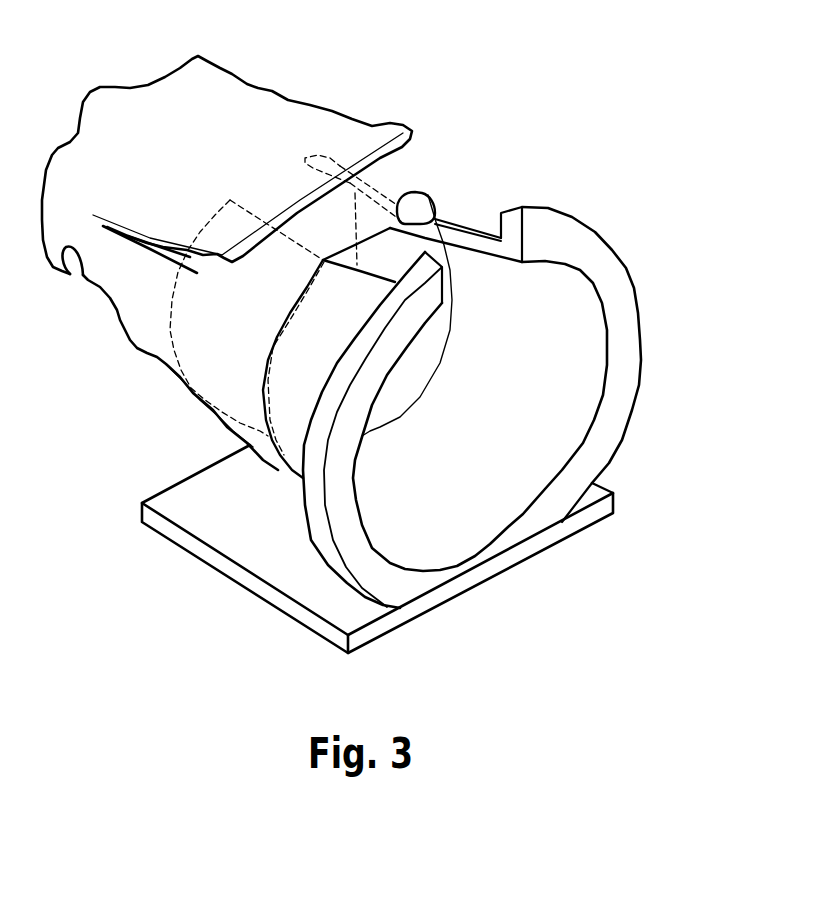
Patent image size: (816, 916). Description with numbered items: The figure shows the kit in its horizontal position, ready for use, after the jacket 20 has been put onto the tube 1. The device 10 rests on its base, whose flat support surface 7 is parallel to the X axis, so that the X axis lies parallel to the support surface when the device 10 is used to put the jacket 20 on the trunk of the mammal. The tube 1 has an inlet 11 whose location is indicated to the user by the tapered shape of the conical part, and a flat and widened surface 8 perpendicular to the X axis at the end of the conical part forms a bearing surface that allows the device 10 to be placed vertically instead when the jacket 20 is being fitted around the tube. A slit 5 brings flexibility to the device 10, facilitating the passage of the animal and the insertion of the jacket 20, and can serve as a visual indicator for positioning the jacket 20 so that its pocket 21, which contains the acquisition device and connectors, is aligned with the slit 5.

The tube 1 is at (297, 400).
The slit 5 is at (391, 245).
The flat support surface 7 is at (293, 613).
The flat and widened surface 8 is at (625, 346).
The device 10 is at (418, 396).
The inlet 11 is at (462, 513).
The jacket 20 is at (140, 328).
The pocket 21 is at (283, 118).